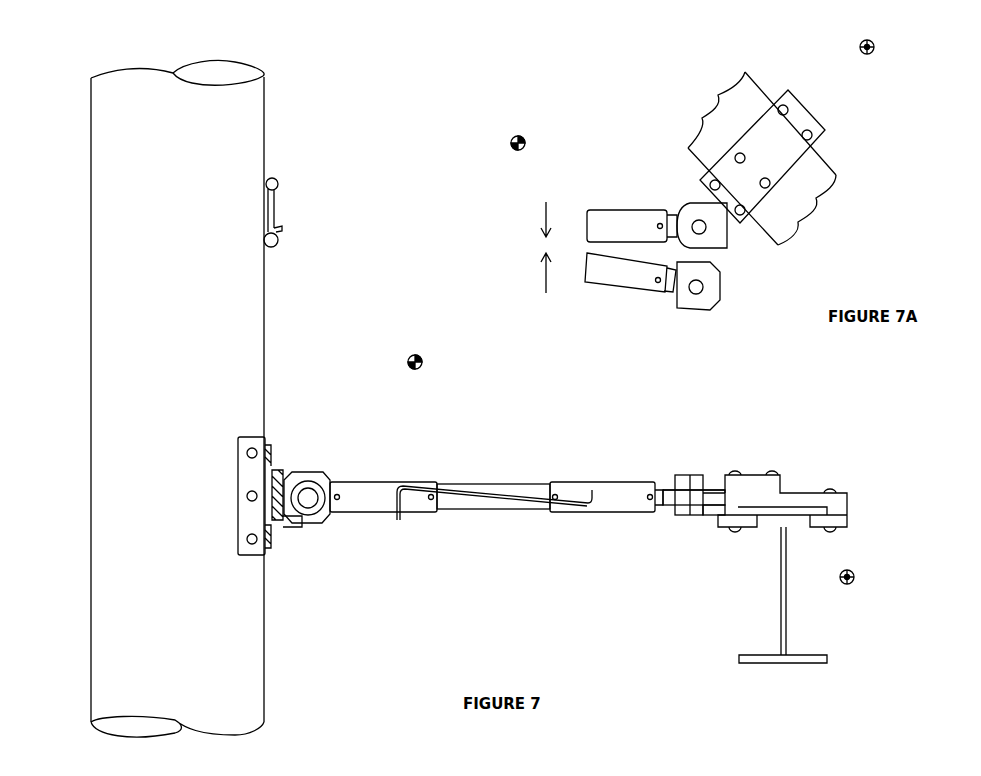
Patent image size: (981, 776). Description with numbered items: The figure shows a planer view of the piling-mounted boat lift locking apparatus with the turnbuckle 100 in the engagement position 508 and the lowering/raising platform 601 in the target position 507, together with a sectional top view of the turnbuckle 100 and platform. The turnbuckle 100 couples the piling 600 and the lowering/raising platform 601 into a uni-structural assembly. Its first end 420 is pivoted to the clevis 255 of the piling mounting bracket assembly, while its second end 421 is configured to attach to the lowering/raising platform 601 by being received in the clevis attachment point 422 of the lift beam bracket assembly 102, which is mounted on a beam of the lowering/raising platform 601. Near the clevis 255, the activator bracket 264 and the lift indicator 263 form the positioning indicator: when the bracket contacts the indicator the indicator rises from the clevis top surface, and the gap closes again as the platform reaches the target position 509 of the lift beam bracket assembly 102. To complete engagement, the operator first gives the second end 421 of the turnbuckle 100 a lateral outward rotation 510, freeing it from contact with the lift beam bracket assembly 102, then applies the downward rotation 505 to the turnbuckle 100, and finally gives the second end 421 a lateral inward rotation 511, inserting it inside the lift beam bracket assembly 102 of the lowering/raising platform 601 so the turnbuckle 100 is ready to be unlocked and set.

In FIG. 7, the turnbuckle 100 is at (628, 480).
In FIG. 7A, the turnbuckle 100 is at (610, 205).
In FIG. 7, the lift beam bracket assembly 102 is at (752, 478).
In FIG. 7A, the lift beam bracket assembly 102 is at (770, 122).
In FIG. 7, the clevis 255 is at (316, 487).
In FIG. 7, the lift indicator 263 is at (276, 470).
In FIG. 7, the activator bracket 264 is at (290, 527).
In FIG. 7, the first end 420 is at (313, 518).
In FIG. 7, the second end 421 is at (708, 490).
In FIG. 7A, the second end 421 is at (723, 245).
In FIG. 7, the clevis attachment point 422 is at (680, 510).
In FIG. 7A, the clevis attachment point 422 is at (700, 193).
In FIG. 7, the downward rotation 505 is at (611, 446).
In FIG. 7A, the downward rotation 505 is at (747, 293).
In FIG. 7, the target position 507 is at (848, 591).
In FIG. 7, the engagement position 508 is at (415, 375).
In FIG. 7A, the engagement position 508 is at (518, 158).
In FIG. 7A, the target position 509 is at (865, 61).
In FIG. 7A, the lateral outward rotation 510 is at (517, 219).
In FIG. 7A, the lateral inward rotation 511 is at (517, 273).
In FIG. 7, the piling 600 is at (91, 178).
In FIG. 7, the lowering/raising platform 601 is at (782, 572).
In FIG. 7A, the lowering/raising platform 601 is at (822, 183).